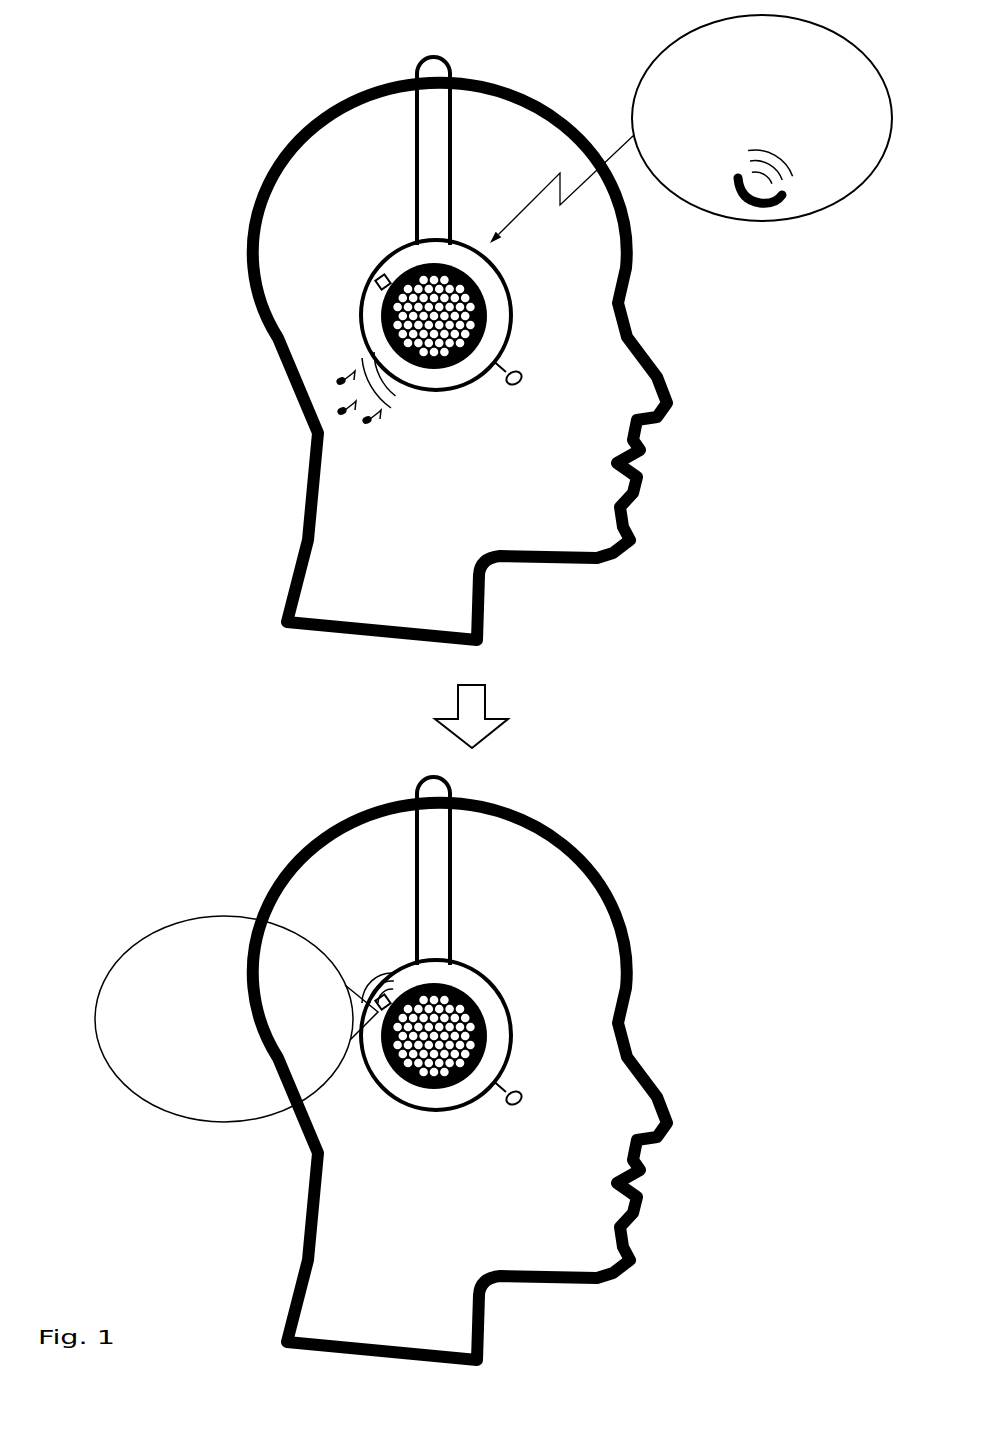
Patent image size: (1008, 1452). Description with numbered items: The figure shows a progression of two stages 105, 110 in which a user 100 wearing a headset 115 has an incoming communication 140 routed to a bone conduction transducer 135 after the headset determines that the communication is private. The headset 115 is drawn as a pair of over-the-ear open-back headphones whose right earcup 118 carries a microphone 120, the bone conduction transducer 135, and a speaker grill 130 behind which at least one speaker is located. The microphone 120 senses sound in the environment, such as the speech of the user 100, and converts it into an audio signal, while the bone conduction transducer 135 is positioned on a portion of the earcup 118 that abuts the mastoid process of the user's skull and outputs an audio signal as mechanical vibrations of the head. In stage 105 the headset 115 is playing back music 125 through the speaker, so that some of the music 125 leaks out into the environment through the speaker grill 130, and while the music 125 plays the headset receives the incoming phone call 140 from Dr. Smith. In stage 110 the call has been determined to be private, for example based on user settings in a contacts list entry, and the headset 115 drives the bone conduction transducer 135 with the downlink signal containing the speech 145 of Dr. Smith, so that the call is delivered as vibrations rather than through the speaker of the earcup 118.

The user 100 is at (169, 773).
The stage 105 is at (56, 353).
The stage 110 is at (34, 1086).
The headset 115 is at (407, 44).
The right earcup 118 is at (510, 308).
The microphone 120 is at (512, 383).
The music 125 is at (383, 435).
The speaker grill 130 is at (369, 316).
The bone conduction transducer 135 is at (385, 273).
The communication 140 is at (653, 67).
The speech 145 is at (190, 920).